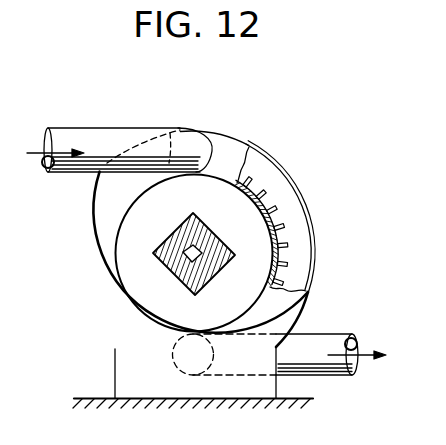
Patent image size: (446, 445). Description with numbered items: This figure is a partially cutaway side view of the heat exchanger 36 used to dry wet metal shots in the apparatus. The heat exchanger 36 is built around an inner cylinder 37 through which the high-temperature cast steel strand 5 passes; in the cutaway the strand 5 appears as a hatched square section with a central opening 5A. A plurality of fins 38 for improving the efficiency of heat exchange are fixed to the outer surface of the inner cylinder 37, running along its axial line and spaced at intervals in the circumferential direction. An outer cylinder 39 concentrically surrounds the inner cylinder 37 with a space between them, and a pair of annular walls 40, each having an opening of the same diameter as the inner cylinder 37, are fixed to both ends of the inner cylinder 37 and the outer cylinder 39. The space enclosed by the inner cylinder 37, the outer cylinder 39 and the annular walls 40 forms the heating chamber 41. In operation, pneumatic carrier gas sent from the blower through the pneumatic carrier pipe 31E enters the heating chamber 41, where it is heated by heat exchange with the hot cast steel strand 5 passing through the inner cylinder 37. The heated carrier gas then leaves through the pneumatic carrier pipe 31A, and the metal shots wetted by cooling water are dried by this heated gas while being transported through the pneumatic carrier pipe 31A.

The cast steel strand 5 is at (198, 213).
The central hole of workpiece 5A is at (200, 240).
The pneumatic carrier pipe 31E is at (103, 133).
The pneumatic carrier pipe 31A is at (338, 366).
The heat exchanger 36 is at (311, 161).
The inner cylinder 37 is at (272, 243).
The fins 38 is at (273, 208).
The outer cylinder 39 is at (315, 232).
The annular walls 40 is at (290, 305).
The heating chamber 41 is at (294, 268).